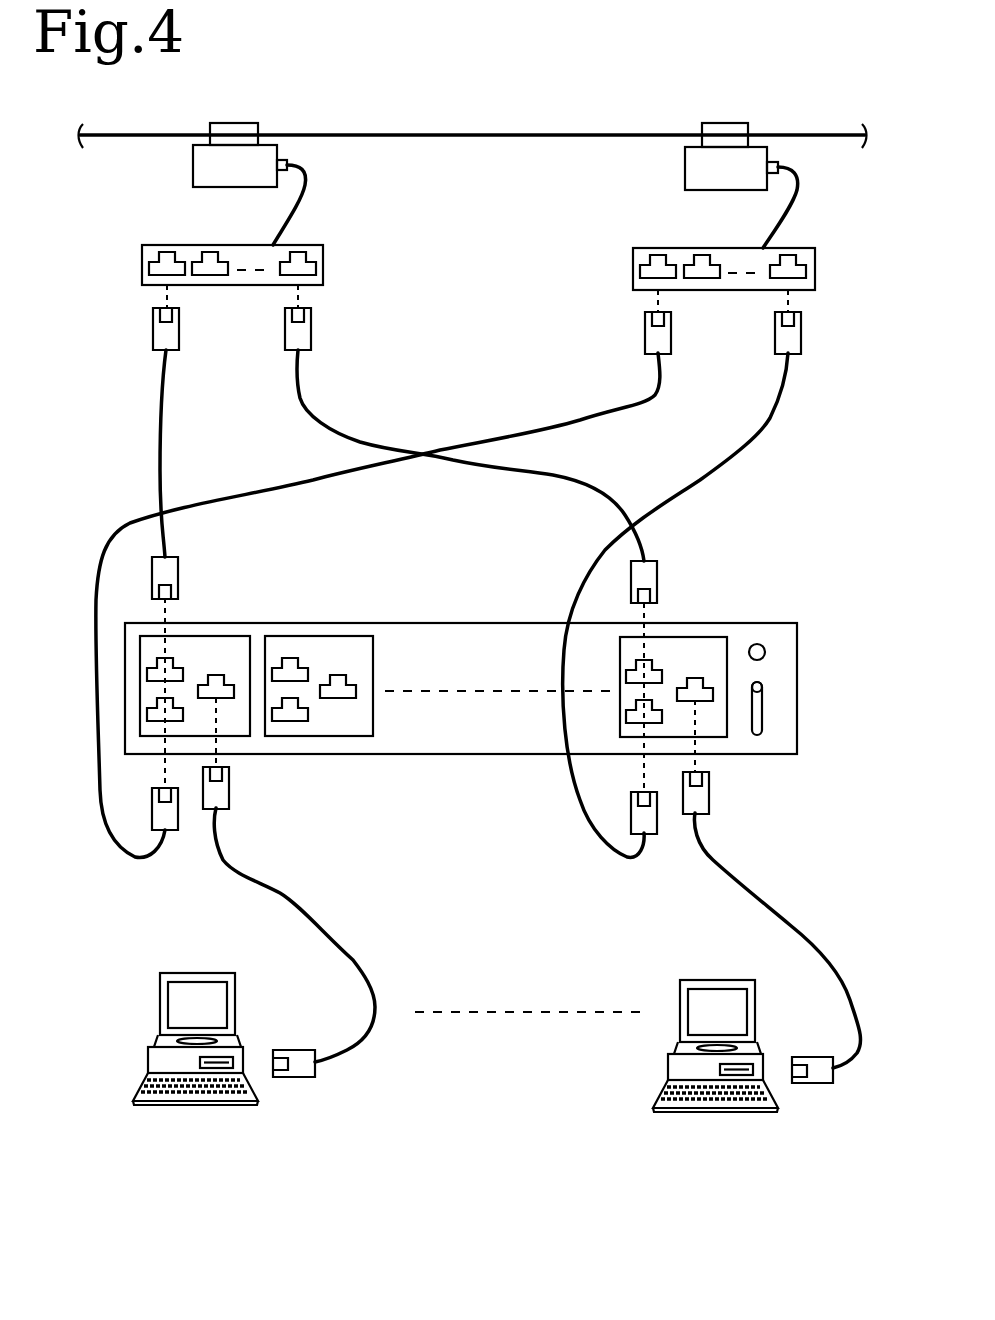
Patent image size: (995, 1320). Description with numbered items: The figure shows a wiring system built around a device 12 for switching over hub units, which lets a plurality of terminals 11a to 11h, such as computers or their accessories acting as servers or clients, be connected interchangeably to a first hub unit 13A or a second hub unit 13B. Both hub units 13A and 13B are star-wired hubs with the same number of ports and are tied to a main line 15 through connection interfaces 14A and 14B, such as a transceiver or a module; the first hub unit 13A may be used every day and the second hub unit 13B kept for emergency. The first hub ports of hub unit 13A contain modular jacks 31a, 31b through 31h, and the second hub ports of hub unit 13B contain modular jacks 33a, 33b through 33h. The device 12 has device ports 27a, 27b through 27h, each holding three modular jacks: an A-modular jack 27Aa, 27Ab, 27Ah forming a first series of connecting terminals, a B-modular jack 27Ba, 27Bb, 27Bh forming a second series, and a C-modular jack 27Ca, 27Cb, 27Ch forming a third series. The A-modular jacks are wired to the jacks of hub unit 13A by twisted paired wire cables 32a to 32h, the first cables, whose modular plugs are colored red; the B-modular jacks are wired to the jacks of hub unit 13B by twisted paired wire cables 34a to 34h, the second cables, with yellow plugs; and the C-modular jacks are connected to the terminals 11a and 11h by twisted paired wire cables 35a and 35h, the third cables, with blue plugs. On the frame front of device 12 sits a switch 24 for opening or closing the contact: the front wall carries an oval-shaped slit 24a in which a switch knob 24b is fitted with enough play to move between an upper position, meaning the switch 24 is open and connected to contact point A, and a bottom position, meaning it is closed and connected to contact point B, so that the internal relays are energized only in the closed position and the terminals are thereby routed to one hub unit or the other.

The main line 15 is at (455, 133).
The connection interface 14A is at (193, 176).
The connection interface 14B is at (685, 179).
The first hub unit 13A is at (253, 270).
The second hub unit 13B is at (744, 272).
The modular jack 31a is at (158, 262).
The modular jack 31b is at (207, 262).
The modular jack 31h is at (308, 271).
The modular jack 33a is at (650, 265).
The modular jack 33b is at (697, 265).
The modular jack 33h is at (800, 275).
The twisted paired wire cable 32a is at (157, 397).
The twisted paired wire cable 32h is at (300, 397).
The twisted paired wire cable 34a is at (567, 422).
The twisted paired wire cable 34h is at (753, 436).
The device for switching over hub units 12 is at (450, 623).
The device port 27a is at (193, 676).
The device port 27b is at (325, 676).
The device port 27h is at (676, 680).
The A-modular jack 27Aa is at (155, 670).
The B-modular jack 27Ba is at (155, 713).
The C-modular jack 27Ca is at (223, 693).
The A-modular jack 27Ab is at (293, 672).
The B-modular jack 27Bb is at (288, 715).
The C-modular jack 27Cb is at (347, 693).
The A-modular jack 27Ah is at (630, 672).
The B-modular jack 27Bh is at (632, 720).
The C-modular jack 27Ch is at (707, 700).
The switch 24 is at (815, 692).
The oval-shaped slit 24a is at (762, 708).
The switch knob 24b is at (761, 685).
The twisted paired wire cable 35a is at (302, 905).
The twisted paired wire cable 35h is at (780, 908).
The terminal 11a is at (193, 1107).
The terminal 11h is at (707, 1112).